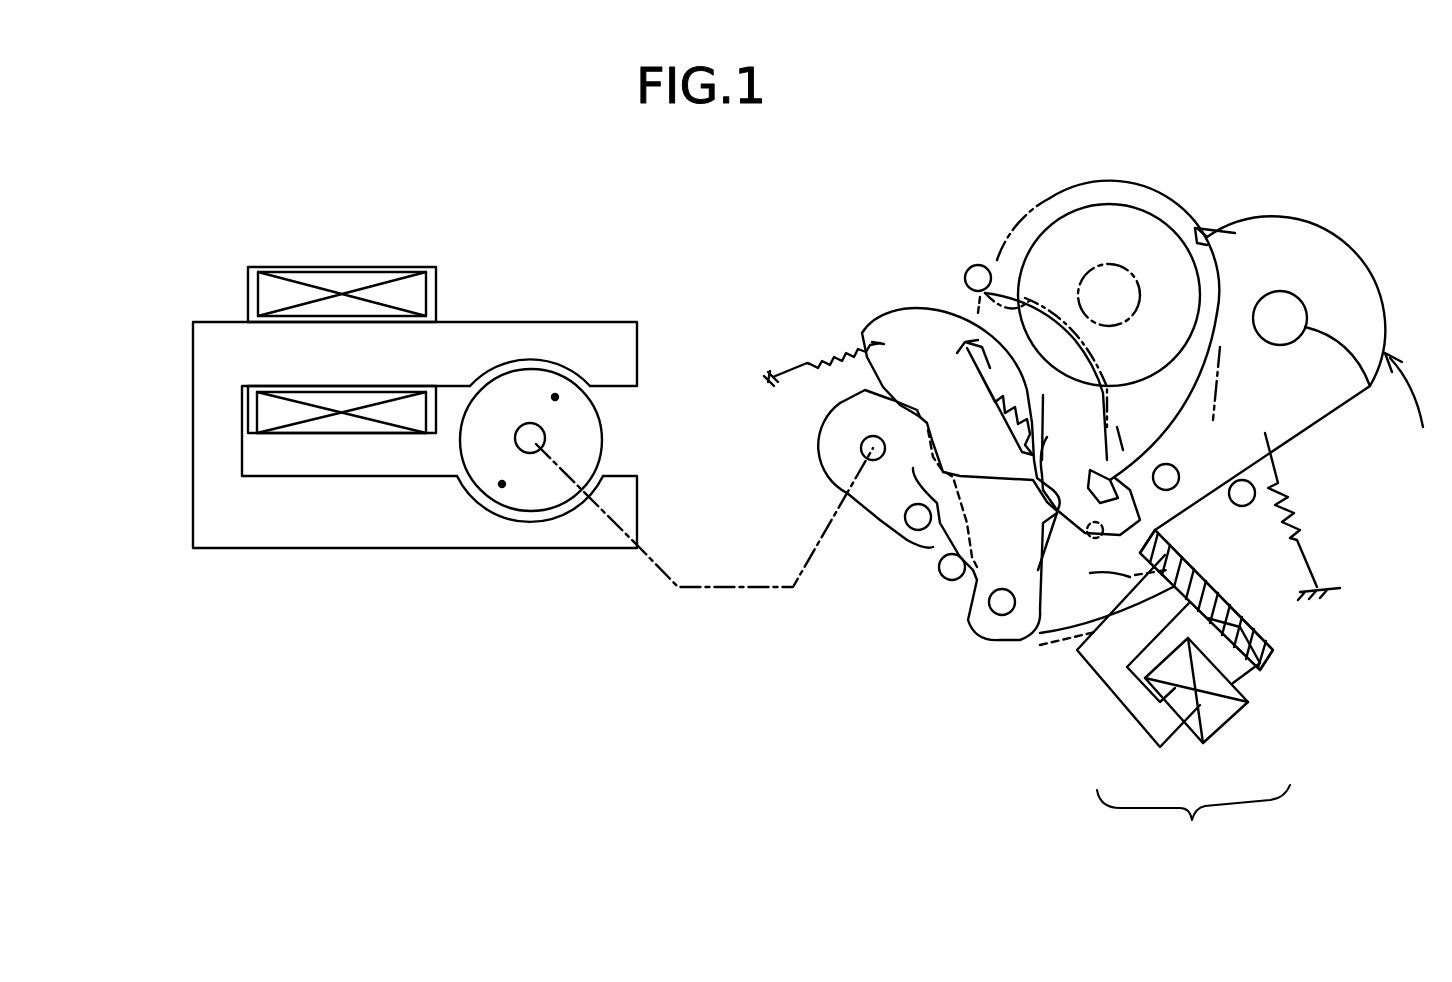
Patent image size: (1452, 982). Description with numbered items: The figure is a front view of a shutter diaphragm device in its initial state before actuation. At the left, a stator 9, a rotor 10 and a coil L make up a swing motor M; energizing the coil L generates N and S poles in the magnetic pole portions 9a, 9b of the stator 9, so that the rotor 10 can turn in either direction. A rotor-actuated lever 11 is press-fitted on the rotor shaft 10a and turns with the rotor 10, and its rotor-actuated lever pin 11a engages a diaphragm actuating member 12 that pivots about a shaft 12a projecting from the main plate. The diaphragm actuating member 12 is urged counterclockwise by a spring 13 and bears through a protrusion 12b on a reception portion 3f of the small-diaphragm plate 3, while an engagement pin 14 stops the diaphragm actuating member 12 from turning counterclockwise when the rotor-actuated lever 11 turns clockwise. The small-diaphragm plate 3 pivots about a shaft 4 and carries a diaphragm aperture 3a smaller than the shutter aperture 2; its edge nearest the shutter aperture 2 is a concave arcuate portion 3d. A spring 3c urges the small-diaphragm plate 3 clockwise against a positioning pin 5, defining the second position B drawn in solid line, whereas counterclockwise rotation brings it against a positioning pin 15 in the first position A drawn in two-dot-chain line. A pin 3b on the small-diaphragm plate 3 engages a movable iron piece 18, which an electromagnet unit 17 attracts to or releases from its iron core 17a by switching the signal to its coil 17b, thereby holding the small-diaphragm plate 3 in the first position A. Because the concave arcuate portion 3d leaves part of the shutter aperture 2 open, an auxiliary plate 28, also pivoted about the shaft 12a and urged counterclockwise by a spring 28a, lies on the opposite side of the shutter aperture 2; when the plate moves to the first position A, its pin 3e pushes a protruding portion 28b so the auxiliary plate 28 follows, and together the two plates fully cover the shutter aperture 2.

The shutter aperture 2 is at (1178, 216).
The small-diaphragm plate 3 is at (1390, 274).
The diaphragm aperture 3a is at (1329, 354).
The pin 3b is at (1115, 470).
The spring 3c is at (1312, 517).
The concave arcuate portion 3d is at (1207, 232).
The pin 3e is at (1048, 528).
The reception portion 3f is at (1047, 437).
The shaft 4 is at (1175, 488).
The positioning pin 5 is at (1246, 506).
The stator 9 is at (195, 398).
The magnetic pole portion 9a is at (575, 345).
The magnetic pole portion 9b is at (572, 540).
The rotor 10 is at (601, 437).
The rotor shaft 10a is at (862, 447).
The rotor-actuated lever 11 is at (890, 508).
The rotor-actuated lever pin 11a is at (918, 531).
The diaphragm actuating member 12 is at (1020, 640).
The shaft 12a is at (1016, 602).
The protrusion 12b is at (950, 470).
The spring 13 is at (997, 440).
The engagement pin 14 is at (952, 581).
The positioning pin 15 is at (965, 276).
The electromagnet unit 17 is at (1193, 823).
The iron core 17a is at (1113, 690).
The coil 17b is at (1230, 727).
The movable iron piece 18 is at (1272, 662).
The auxiliary plate 28 is at (880, 322).
The spring 28a is at (805, 357).
The protruding portion 28b is at (1165, 550).
The first position A is at (1013, 233).
The second position B is at (1417, 413).
The coil L is at (376, 268).
The swing motor M is at (350, 548).